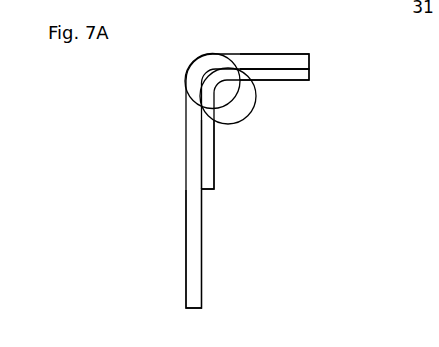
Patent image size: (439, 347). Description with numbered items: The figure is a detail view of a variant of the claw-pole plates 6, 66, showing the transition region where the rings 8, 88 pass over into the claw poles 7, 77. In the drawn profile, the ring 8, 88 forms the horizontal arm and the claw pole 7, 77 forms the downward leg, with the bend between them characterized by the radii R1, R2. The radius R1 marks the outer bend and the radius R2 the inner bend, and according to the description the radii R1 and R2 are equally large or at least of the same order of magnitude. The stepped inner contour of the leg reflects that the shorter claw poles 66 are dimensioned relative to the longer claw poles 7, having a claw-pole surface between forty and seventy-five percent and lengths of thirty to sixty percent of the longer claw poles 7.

The claw-pole plate 6 is at (185, 218).
The longer claw pole 7 is at (192, 267).
The ring 8 is at (295, 60).
The claw-pole plate / shorter claw pole 66 is at (215, 158).
The claw pole 77 is at (207, 177).
The ring 88 is at (293, 74).
The radius R1 is at (204, 54).
The radius R2 is at (228, 62).